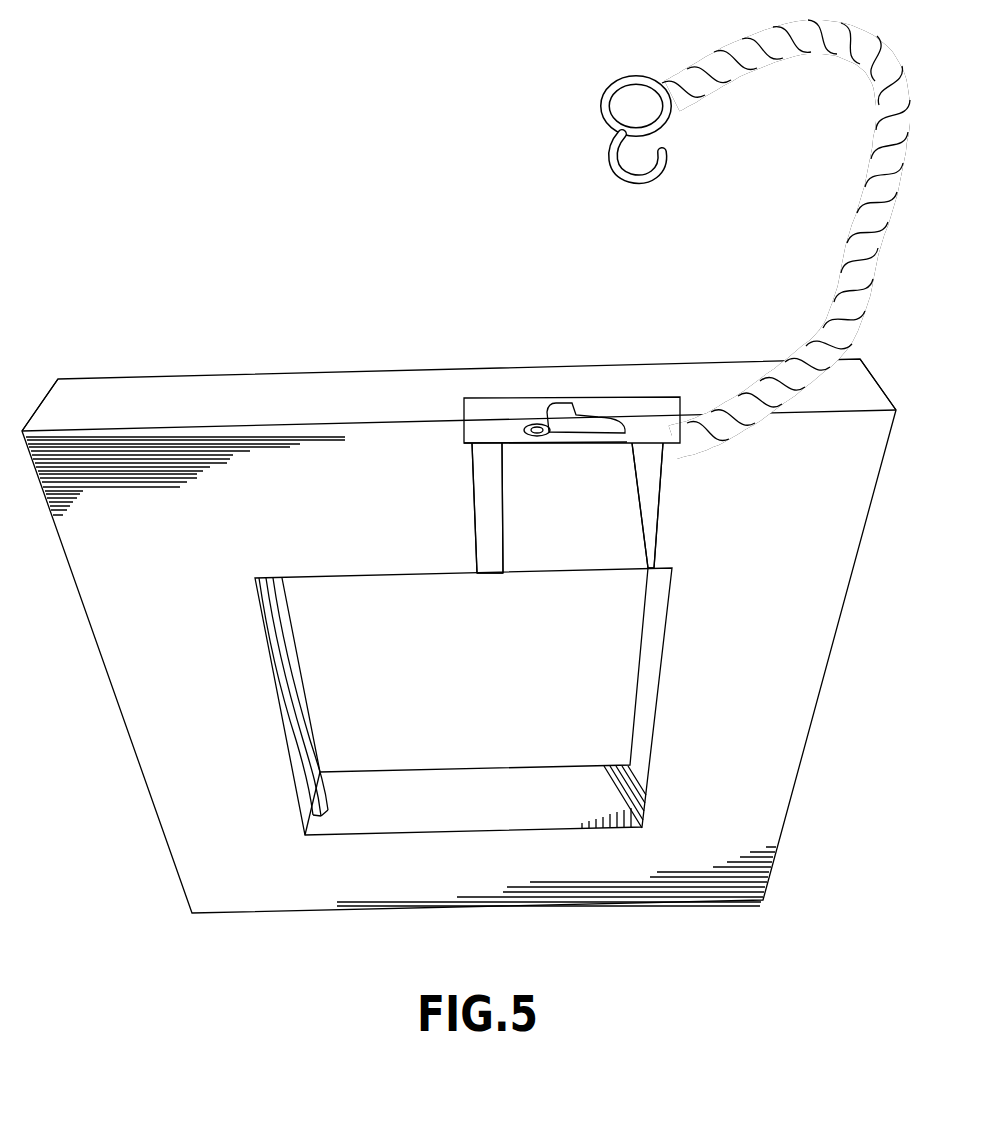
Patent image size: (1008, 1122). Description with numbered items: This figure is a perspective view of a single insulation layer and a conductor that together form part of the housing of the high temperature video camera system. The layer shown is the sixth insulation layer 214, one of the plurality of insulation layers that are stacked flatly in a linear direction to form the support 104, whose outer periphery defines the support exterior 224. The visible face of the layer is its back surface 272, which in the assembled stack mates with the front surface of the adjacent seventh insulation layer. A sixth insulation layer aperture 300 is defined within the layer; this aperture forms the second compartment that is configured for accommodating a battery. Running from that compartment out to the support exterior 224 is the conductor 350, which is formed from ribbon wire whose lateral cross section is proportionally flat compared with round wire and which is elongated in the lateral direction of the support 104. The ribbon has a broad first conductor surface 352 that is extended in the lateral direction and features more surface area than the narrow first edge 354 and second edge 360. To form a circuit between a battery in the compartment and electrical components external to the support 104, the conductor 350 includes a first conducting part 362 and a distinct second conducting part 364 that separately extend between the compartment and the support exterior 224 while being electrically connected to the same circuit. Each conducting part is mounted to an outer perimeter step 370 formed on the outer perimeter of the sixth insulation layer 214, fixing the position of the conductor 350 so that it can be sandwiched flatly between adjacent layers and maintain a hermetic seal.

The support 104 is at (459, 578).
The sixth insulation layer 214 is at (352, 388).
The support exterior 224 is at (107, 395).
The back surface of the sixth insulation layer 272 is at (267, 485).
The sixth insulation layer aperture 300 is at (412, 813).
The conductor 350 is at (542, 460).
The first conductor surface 352 is at (493, 558).
The first edge 354 is at (478, 519).
The second edge 360 is at (694, 440).
The first conducting part 362 is at (485, 537).
The second conducting part 364 is at (643, 518).
The outer perimeter step 370 is at (566, 430).